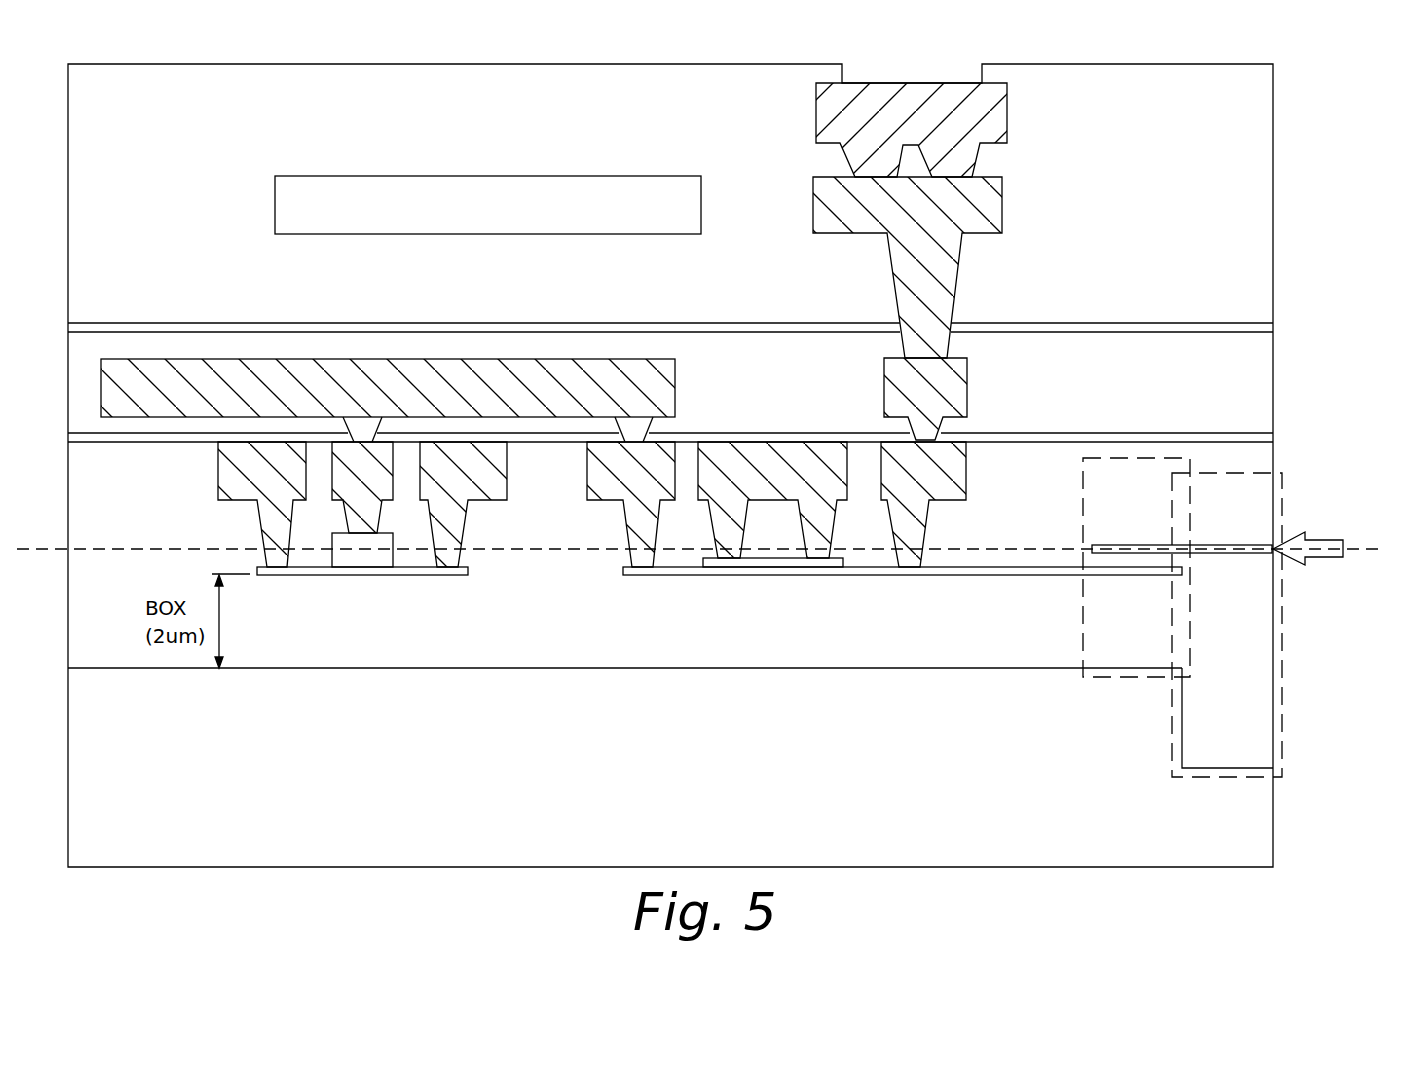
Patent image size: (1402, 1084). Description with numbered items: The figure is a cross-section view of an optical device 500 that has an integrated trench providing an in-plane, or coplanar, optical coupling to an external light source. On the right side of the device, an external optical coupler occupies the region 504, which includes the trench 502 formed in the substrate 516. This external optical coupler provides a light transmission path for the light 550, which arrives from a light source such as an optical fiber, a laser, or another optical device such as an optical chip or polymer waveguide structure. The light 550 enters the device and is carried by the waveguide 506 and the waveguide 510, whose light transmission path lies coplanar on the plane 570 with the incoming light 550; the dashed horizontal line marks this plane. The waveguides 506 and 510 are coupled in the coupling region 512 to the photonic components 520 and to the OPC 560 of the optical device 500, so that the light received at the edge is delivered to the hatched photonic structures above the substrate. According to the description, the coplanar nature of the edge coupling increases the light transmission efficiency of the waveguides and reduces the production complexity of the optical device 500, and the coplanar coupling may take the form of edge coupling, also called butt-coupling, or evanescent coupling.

The optical device 500 is at (1294, 90).
The trench 502 is at (1247, 730).
The region 504 is at (1215, 778).
The waveguide 506 is at (1210, 545).
The waveguide 510 is at (1013, 580).
The coupling region 512 is at (1126, 678).
The substrate 516 is at (567, 776).
The photonic components 520 is at (523, 400).
The light 550 is at (1322, 540).
The OPC 560 is at (934, 122).
The plane 570 is at (53, 548).